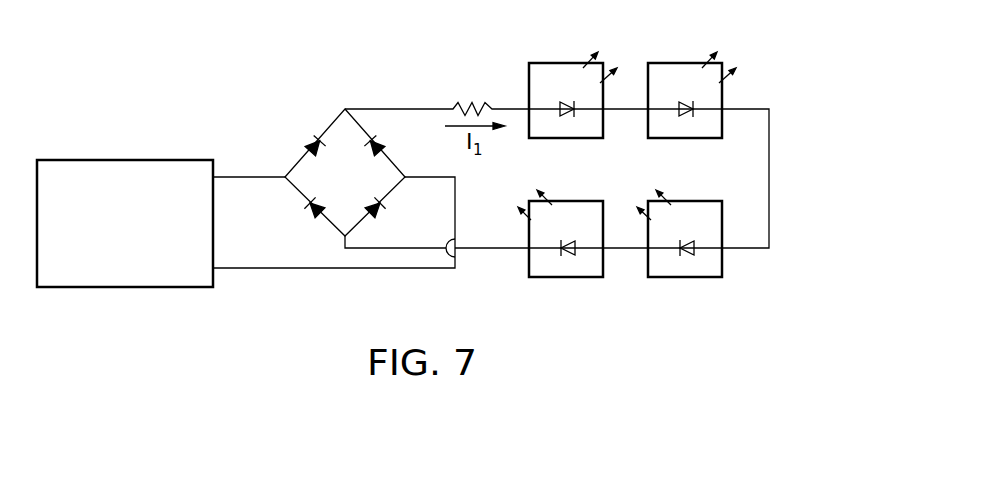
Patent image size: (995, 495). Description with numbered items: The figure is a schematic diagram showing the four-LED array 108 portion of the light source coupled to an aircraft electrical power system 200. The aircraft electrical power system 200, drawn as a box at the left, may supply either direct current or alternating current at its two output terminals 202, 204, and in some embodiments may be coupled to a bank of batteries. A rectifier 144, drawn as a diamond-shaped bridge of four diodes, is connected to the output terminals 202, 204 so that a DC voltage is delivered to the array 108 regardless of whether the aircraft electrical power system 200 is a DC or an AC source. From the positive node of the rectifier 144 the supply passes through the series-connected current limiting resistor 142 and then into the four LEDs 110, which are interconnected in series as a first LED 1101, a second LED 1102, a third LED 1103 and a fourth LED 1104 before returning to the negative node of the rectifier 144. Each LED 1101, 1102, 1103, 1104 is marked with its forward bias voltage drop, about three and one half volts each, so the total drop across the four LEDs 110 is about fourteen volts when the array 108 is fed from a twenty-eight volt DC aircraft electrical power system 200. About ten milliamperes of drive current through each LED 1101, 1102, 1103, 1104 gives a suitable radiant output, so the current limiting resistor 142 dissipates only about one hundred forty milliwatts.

The aircraft electrical power system 200 is at (122, 160).
The output terminal 202 is at (257, 177).
The output terminal 204 is at (290, 268).
The rectifier 144 is at (335, 118).
The current limiting resistor 142 is at (468, 100).
The array 108 is at (778, 78).
The LED 110 is at (627, 168).
The first LED 1101 is at (567, 62).
The second LED 1102 is at (685, 62).
The third LED 1103 is at (683, 277).
The fourth LED 1104 is at (565, 277).